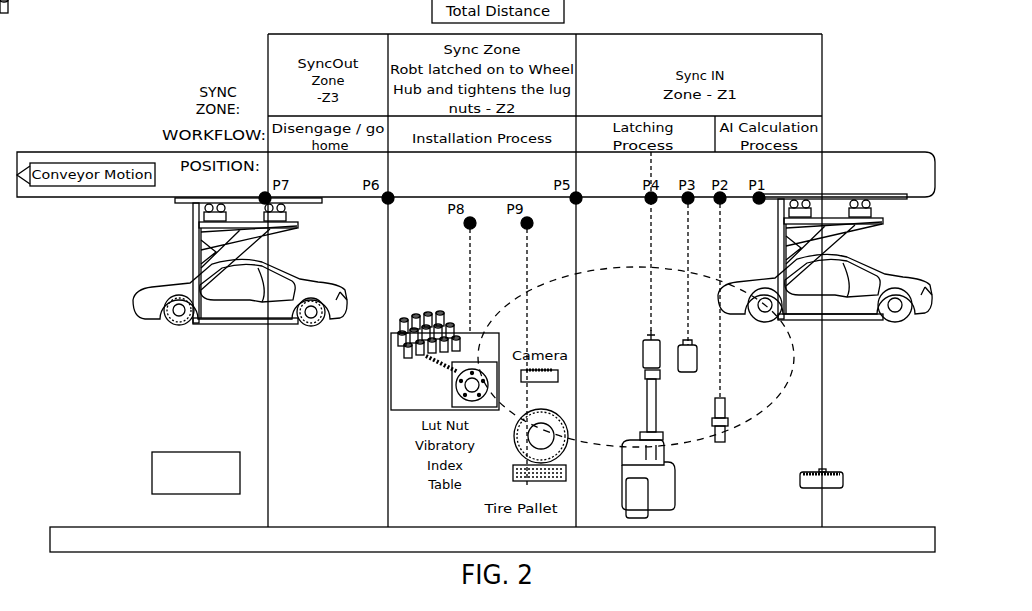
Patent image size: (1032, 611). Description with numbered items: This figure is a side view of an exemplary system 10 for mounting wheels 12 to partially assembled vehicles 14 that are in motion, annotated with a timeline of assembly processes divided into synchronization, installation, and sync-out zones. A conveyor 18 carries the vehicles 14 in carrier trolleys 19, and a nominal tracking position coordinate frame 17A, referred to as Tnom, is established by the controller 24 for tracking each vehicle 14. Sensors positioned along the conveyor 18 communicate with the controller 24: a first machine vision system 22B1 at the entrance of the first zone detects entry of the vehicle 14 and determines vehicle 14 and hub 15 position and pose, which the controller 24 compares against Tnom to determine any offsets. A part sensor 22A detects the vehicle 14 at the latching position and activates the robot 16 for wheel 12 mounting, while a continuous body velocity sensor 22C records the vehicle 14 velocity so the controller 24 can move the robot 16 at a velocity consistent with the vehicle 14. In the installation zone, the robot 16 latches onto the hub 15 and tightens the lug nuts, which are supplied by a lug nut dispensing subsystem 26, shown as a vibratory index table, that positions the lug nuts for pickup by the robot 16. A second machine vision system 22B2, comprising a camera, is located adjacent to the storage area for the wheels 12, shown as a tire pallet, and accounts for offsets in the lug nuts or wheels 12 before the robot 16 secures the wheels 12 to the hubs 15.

The system 10 is at (853, 110).
The wheel 12 is at (172, 320).
The partially assembled vehicle 14 is at (163, 295).
The hub 15 is at (758, 318).
The robot 16 is at (624, 486).
The nominal tracking position coordinate frame 17A is at (826, 378).
The conveyor 18 is at (832, 182).
The carrier trolley 19 is at (838, 228).
The part sensor 22A is at (718, 444).
The first machine vision system 22B1 is at (838, 478).
The second machine vision system 22B2 is at (522, 368).
The continuous body velocity sensor 22C is at (678, 373).
The controller 24 is at (196, 473).
The lug nut dispensing subsystem 26 is at (408, 422).